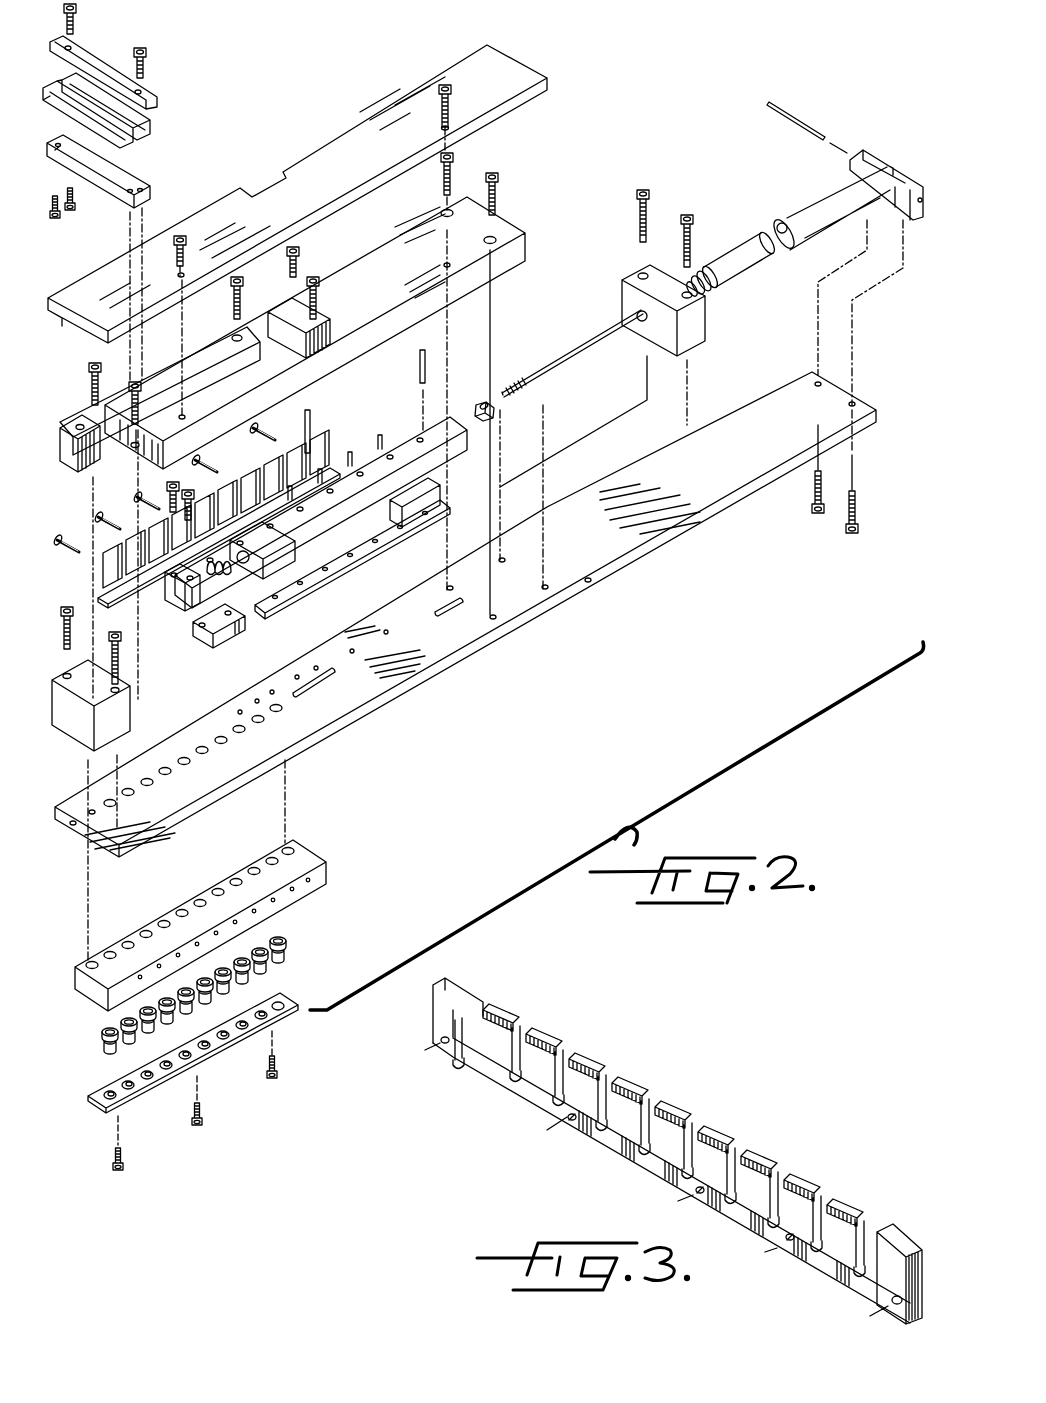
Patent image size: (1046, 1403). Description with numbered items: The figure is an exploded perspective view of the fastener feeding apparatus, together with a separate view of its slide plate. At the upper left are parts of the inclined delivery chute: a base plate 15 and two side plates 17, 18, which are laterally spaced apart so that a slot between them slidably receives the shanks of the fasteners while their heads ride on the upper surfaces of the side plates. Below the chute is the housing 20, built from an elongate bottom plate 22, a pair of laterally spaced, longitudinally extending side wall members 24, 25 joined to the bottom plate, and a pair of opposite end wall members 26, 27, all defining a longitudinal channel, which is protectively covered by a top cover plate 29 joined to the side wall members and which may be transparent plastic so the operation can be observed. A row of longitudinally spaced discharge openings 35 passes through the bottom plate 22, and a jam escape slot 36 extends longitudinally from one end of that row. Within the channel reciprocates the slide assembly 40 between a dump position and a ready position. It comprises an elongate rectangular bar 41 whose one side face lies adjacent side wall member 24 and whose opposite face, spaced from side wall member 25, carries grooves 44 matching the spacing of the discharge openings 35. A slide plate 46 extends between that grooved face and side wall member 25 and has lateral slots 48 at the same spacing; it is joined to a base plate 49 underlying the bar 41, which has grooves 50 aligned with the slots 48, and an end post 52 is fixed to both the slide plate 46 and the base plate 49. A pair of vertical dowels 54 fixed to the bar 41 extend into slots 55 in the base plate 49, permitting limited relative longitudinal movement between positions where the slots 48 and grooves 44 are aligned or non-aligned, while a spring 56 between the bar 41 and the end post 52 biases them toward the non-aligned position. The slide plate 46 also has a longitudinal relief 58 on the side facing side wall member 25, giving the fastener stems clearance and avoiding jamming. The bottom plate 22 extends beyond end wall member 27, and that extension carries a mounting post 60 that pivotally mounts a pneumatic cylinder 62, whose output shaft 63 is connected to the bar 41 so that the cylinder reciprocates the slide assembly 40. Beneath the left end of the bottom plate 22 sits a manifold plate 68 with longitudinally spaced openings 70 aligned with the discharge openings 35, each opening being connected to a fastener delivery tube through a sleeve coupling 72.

In FIG. 2, the base plate 15 is at (127, 170).
In FIG. 2, the side plate 17 is at (85, 100).
In FIG. 2, the side plate 18 is at (160, 130).
In FIG. 2, the housing 20 is at (519, 206).
In FIG. 2, the bottom plate 22 is at (503, 628).
In FIG. 2, the side wall member 24 is at (483, 273).
In FIG. 2, the side wall member 25 is at (382, 252).
In FIG. 2, the end wall member 26 is at (85, 735).
In FIG. 2, the end wall member 27 is at (705, 330).
In FIG. 2, the top cover plate 29 is at (362, 130).
In FIG. 2, the discharge openings 35 is at (221, 737).
In FIG. 2, the jam escape slot 36 is at (350, 655).
In FIG. 2, the slide assembly 40 is at (457, 407).
In FIG. 2, the elongate rectangular bar 41 is at (428, 462).
In FIG. 2, the grooves 44 is at (318, 466).
In FIG. 2, the slide plate 46 is at (105, 572).
In FIG. 3, the slide plate 46 is at (625, 1080).
In FIG. 3, the slots 48 is at (525, 1025).
In FIG. 2, the base plate 49 is at (372, 560).
In FIG. 2, the grooves 50 is at (240, 642).
In FIG. 2, the end post 52 is at (165, 588).
In FIG. 2, the vertical dowels 54 is at (425, 352).
In FIG. 2, the slots 55 is at (280, 590).
In FIG. 2, the spring 56 is at (215, 583).
In FIG. 3, the longitudinal relief 58 is at (500, 1048).
In FIG. 2, the mounting post 60 is at (853, 155).
In FIG. 2, the pneumatic cylinder 62 is at (790, 217).
In FIG. 2, the output shaft 63 is at (570, 367).
In FIG. 2, the manifold plate 68 is at (300, 842).
In FIG. 2, the openings 70 is at (203, 905).
In FIG. 2, the sleeve coupling 72 is at (300, 935).